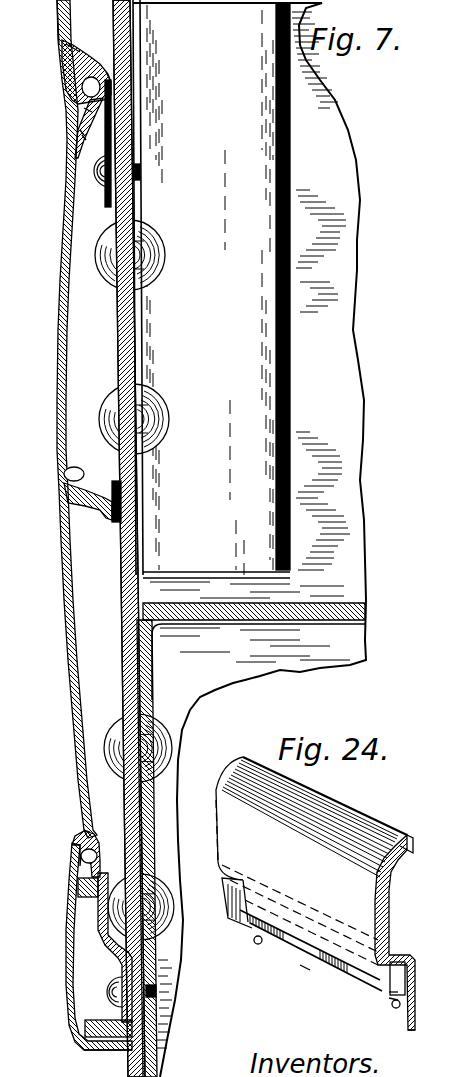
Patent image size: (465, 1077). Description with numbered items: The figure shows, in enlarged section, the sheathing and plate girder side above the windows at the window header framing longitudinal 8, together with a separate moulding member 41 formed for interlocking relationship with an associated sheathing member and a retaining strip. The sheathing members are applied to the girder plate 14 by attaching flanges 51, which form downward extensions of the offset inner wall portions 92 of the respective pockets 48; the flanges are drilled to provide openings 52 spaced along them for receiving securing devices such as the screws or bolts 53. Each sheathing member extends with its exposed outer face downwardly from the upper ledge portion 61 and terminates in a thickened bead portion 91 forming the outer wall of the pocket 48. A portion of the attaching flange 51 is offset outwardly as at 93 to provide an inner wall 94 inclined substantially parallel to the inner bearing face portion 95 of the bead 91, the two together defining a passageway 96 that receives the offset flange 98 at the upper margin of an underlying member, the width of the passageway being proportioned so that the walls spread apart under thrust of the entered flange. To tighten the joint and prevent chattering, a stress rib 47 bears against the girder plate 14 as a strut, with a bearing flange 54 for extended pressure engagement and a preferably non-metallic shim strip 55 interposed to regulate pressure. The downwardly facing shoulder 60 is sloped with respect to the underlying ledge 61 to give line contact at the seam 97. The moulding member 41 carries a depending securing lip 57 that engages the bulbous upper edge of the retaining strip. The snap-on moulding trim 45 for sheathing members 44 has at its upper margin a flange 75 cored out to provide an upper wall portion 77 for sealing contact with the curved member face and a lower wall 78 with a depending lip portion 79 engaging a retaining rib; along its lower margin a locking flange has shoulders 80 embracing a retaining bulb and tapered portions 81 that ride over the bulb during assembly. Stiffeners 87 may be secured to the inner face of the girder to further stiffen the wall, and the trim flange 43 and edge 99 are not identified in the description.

In FIG. 7, the window header framing longitudinal 8 is at (249, 540).
In FIG. 7, the girder plate 14 is at (122, 487).
In FIG. 24, the moulding member 41 is at (234, 768).
In FIG. 7, the outer flange 43 is at (60, 50).
In FIG. 7, the sheathing member 44 is at (58, 418).
In FIG. 7, the moulding trim 45 is at (72, 980).
In FIG. 7, the stress rib 47 is at (64, 467).
In FIG. 7, the pocket 48 is at (78, 86).
In FIG. 7, the attaching flange 51 is at (106, 201).
In FIG. 24, the attaching flange 51 is at (300, 965).
In FIG. 24, the opening 52 is at (256, 943).
In FIG. 7, the screw or bolt 53 is at (140, 172).
In FIG. 7, the bearing flange 54 is at (110, 507).
In FIG. 7, the shim strip 55 is at (116, 517).
In FIG. 24, the securing lip 57 is at (410, 838).
In FIG. 7, the shoulder 60 is at (82, 125).
In FIG. 24, the shoulder 60 is at (390, 1000).
In FIG. 7, the ledge portion 61 is at (85, 137).
In FIG. 7, the flange 75 is at (76, 841).
In FIG. 7, the upper wall portion 77 is at (78, 828).
In FIG. 7, the lower wall 78 is at (97, 874).
In FIG. 7, the lip portion 79 is at (78, 885).
In FIG. 7, the shoulder 80 is at (113, 1050).
In FIG. 7, the tapered portion 81 is at (128, 1038).
In FIG. 7, the stiffener 87 is at (216, 290).
In FIG. 7, the bead portion 91 is at (80, 115).
In FIG. 7, the inner wall portion 92 is at (96, 52).
In FIG. 7, the offset 93 is at (111, 126).
In FIG. 24, the offset 93 is at (414, 992).
In FIG. 7, the inner wall 94 is at (104, 110).
In FIG. 7, the inner bearing face portion 95 is at (83, 96).
In FIG. 24, the passageway 96 is at (389, 950).
In FIG. 7, the seam 97 is at (81, 131).
In FIG. 7, the flange 98 is at (113, 91).
In FIG. 24, the flange 98 is at (390, 997).
In FIG. 24, the edge 99 is at (420, 972).